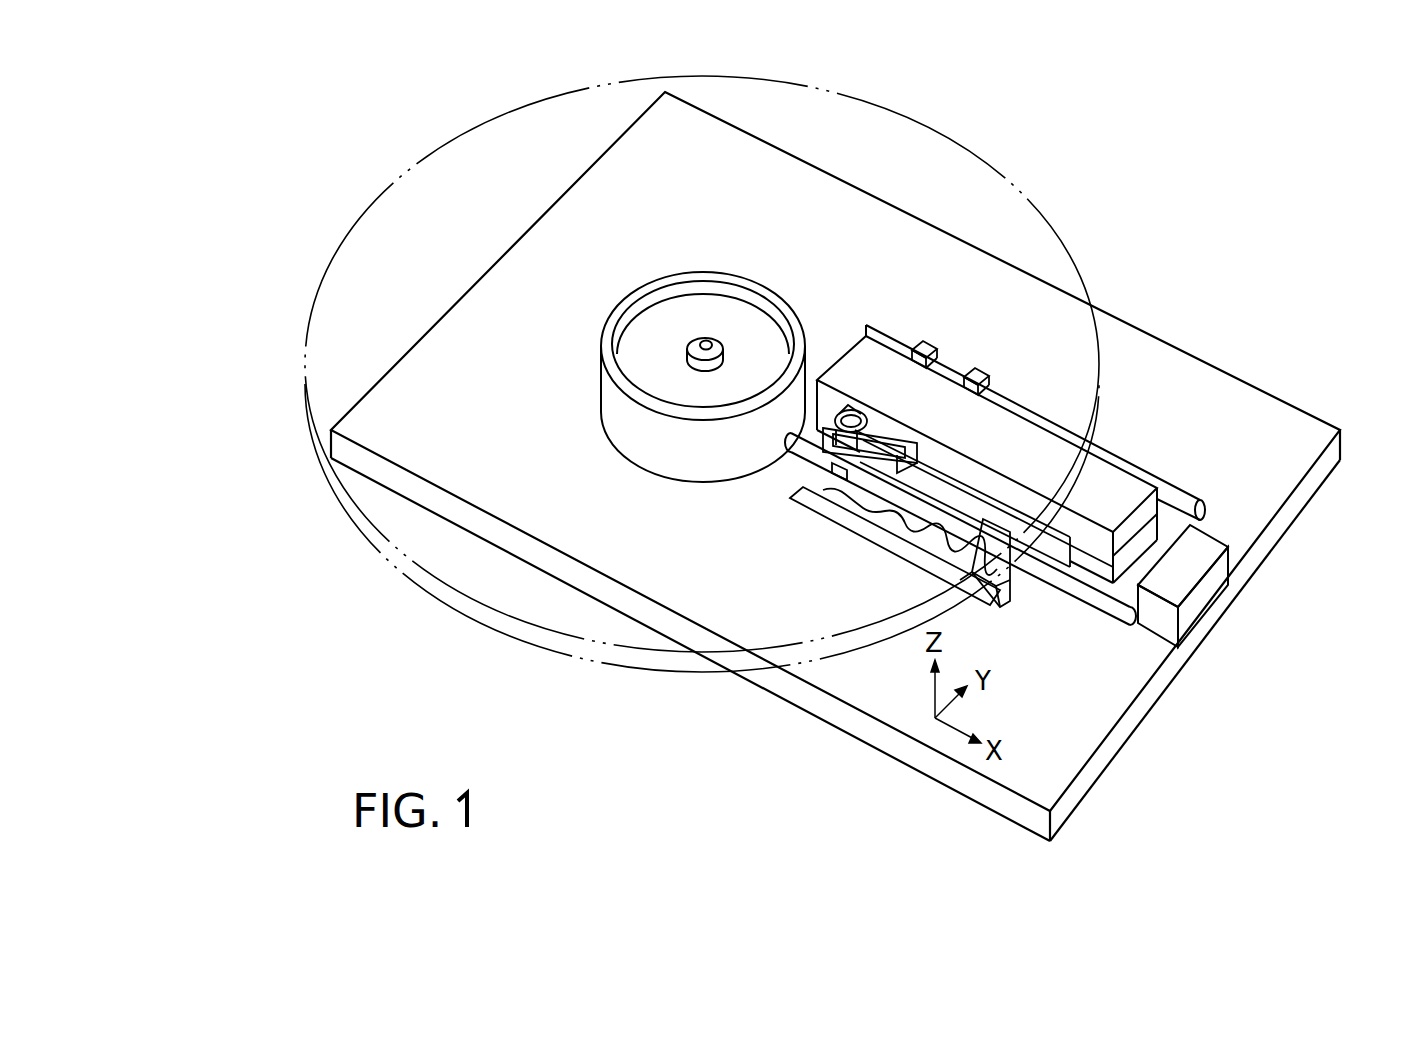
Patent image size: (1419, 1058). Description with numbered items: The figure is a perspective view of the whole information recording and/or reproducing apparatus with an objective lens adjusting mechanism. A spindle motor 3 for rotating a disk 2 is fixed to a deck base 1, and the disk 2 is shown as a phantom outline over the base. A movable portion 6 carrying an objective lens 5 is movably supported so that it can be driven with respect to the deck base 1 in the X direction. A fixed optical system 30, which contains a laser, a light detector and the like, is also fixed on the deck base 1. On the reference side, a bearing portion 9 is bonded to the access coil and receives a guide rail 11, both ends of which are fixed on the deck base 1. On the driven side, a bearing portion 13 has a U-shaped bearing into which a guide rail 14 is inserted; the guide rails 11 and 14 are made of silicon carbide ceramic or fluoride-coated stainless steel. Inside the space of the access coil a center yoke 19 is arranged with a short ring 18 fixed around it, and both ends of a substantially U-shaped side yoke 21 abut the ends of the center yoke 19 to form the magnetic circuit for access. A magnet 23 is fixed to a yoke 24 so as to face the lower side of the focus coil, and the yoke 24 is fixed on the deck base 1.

The deck base 1 is at (1200, 380).
The disk 2 is at (1018, 190).
The spindle motor 3 is at (612, 418).
The objective lens 5 is at (846, 405).
The movable portion 6 is at (783, 470).
The bearing portion 9 is at (930, 347).
The guide rail 11 is at (1192, 497).
The bearing portion 13 is at (838, 473).
The guide rail 14 is at (1112, 622).
The short ring 18 is at (1055, 553).
The center yoke 19 is at (1140, 547).
The side yoke 21 is at (1113, 487).
The magnet 23 is at (895, 520).
The yoke 24 is at (1003, 597).
The fixed optical system 30 is at (1228, 566).